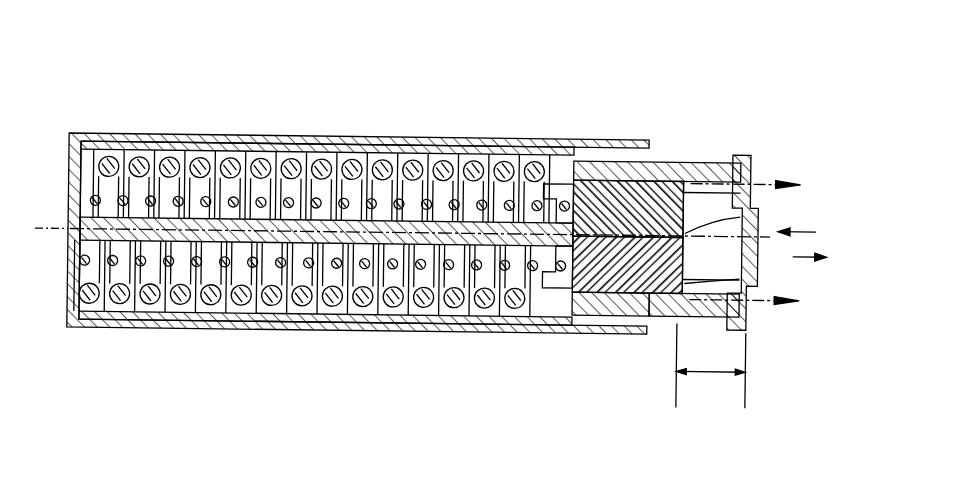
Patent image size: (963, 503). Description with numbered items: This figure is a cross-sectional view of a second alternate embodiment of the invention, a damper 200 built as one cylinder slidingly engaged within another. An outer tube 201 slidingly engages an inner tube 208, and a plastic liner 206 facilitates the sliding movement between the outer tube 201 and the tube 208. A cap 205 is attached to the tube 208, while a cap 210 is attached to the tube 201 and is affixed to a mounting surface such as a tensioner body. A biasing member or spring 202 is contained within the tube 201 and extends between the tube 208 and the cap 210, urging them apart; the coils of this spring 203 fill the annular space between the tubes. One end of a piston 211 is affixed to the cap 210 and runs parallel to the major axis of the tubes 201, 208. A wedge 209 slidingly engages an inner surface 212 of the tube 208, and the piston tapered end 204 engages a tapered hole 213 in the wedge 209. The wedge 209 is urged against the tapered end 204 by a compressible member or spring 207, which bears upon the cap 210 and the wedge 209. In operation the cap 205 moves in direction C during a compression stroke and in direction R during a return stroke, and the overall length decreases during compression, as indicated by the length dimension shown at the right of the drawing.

The damper 200 is at (548, 102).
The outer tube 201 is at (125, 134).
The spring 202 is at (278, 327).
The springs 203 is at (324, 233).
The piston tapered end 204 is at (665, 312).
The cap 205 is at (748, 147).
The plastic liner 206 is at (183, 328).
The spring 207 is at (380, 324).
The tube 208 is at (683, 156).
The wedge 209 is at (598, 330).
The cap 210 is at (72, 178).
The piston 211 is at (70, 236).
The inner surface 212 is at (713, 273).
The tapered hole 213 is at (758, 202).